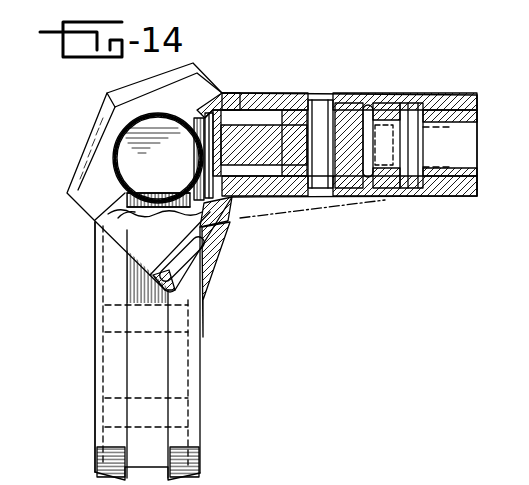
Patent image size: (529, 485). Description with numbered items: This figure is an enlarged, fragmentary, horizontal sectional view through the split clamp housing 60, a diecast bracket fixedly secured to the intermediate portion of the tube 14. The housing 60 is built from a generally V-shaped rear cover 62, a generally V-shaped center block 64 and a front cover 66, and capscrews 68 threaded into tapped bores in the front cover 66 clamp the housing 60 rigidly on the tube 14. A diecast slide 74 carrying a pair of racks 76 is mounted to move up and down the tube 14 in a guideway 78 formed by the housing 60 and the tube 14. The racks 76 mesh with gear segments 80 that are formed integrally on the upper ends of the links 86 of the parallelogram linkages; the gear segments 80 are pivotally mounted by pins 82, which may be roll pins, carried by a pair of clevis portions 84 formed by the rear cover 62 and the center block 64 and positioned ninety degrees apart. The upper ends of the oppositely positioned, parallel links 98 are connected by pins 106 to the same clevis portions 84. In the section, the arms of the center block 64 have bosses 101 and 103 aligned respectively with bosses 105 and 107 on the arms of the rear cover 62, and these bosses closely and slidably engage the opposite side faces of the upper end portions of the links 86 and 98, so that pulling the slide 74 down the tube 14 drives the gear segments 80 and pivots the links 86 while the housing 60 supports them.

The tube 14 is at (110, 160).
The split clamp housing 60 is at (123, 90).
The rear cover 62 is at (217, 338).
The center block 64 is at (93, 241).
The front cover 66 is at (97, 122).
The capscrews 68 is at (187, 268).
The slide 74 is at (120, 212).
The racks 76 is at (222, 182).
The guideway 78 is at (200, 172).
The gear segments 80 is at (228, 125).
The pins 82 is at (318, 123).
The clevis portions 84 is at (471, 196).
The links 86 is at (357, 167).
The parallel links 98 is at (390, 132).
The boss 101 is at (297, 117).
The boss 103 is at (446, 125).
The boss 105 is at (347, 180).
The pins 106 is at (412, 145).
The boss 107 is at (442, 178).